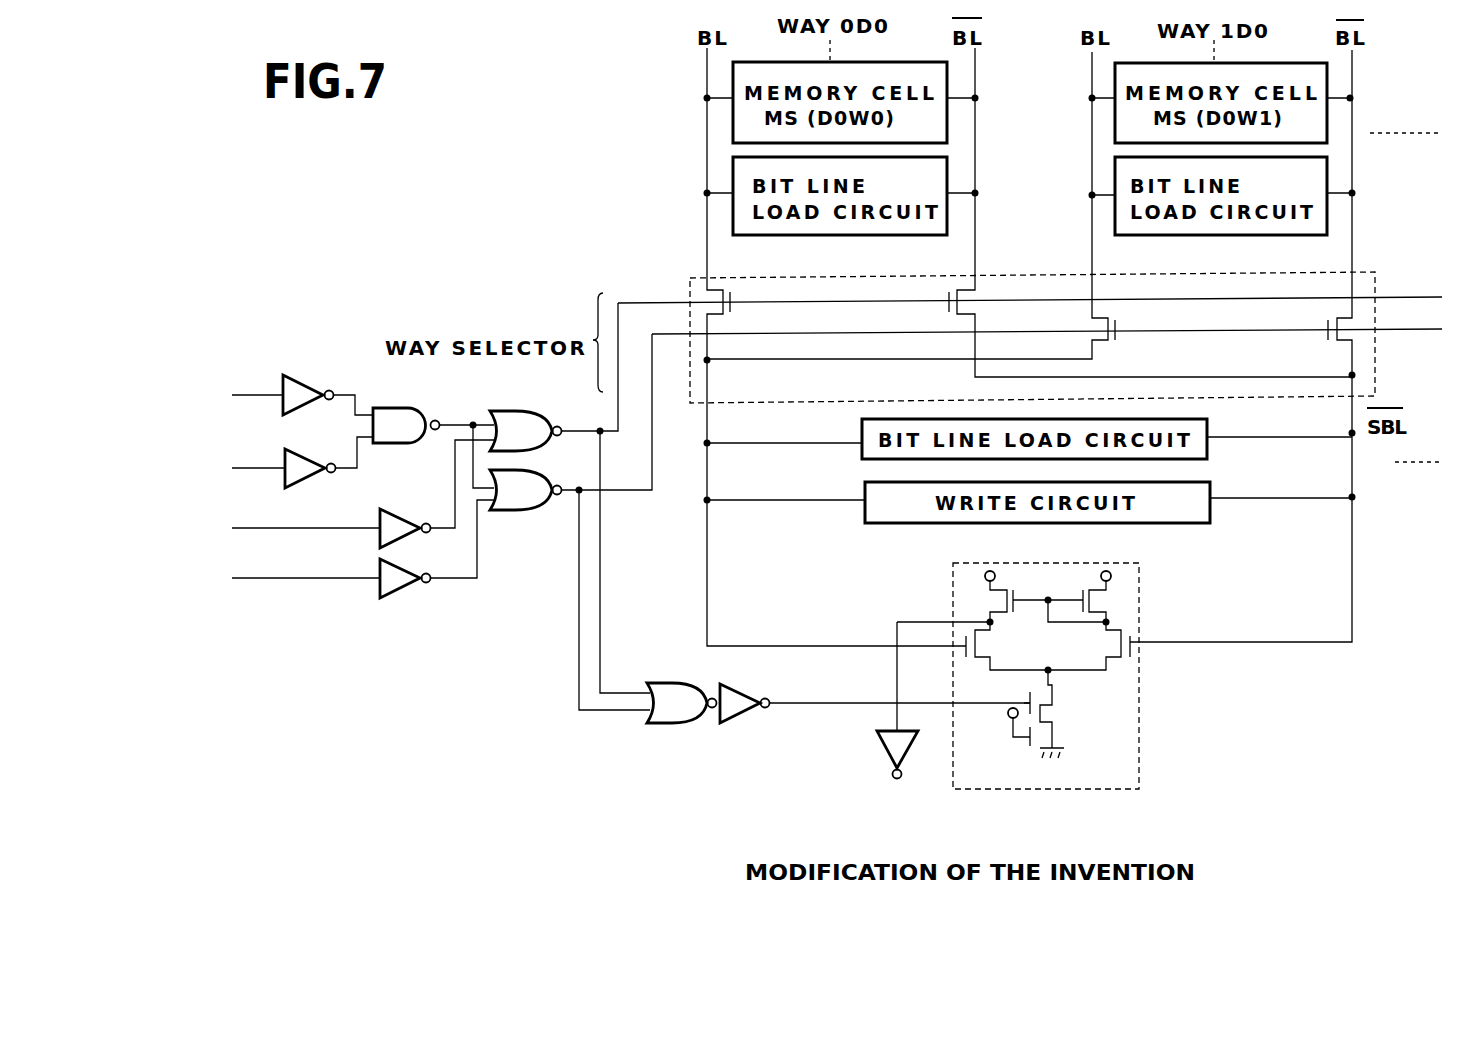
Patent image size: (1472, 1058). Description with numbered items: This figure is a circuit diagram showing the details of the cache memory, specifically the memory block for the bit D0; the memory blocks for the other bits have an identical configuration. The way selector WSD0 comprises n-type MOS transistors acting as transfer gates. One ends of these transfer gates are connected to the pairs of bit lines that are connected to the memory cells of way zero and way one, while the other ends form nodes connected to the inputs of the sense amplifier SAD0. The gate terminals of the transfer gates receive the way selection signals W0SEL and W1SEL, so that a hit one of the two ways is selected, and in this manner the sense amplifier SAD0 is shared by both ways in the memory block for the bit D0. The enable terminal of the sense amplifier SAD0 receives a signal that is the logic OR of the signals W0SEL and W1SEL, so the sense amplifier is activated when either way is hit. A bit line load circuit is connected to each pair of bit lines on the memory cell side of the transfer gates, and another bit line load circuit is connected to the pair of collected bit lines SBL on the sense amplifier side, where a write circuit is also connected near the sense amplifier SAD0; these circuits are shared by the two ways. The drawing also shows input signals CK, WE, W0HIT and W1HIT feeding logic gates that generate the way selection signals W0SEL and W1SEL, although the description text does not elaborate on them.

The way selector WSD0 is at (1375, 363).
The sense amplifier SAD0 is at (1140, 738).
The bit D0 is at (897, 779).
The collected bit line SBL is at (785, 461).
The way selection signal W0SEL is at (586, 430).
The way selection signal W1SEL is at (626, 490).
The clock input CK is at (281, 395).
The write enable input WE is at (280, 462).
The way 0 hit input W0HIT is at (325, 494).
The way 1 hit input W1HIT is at (325, 549).